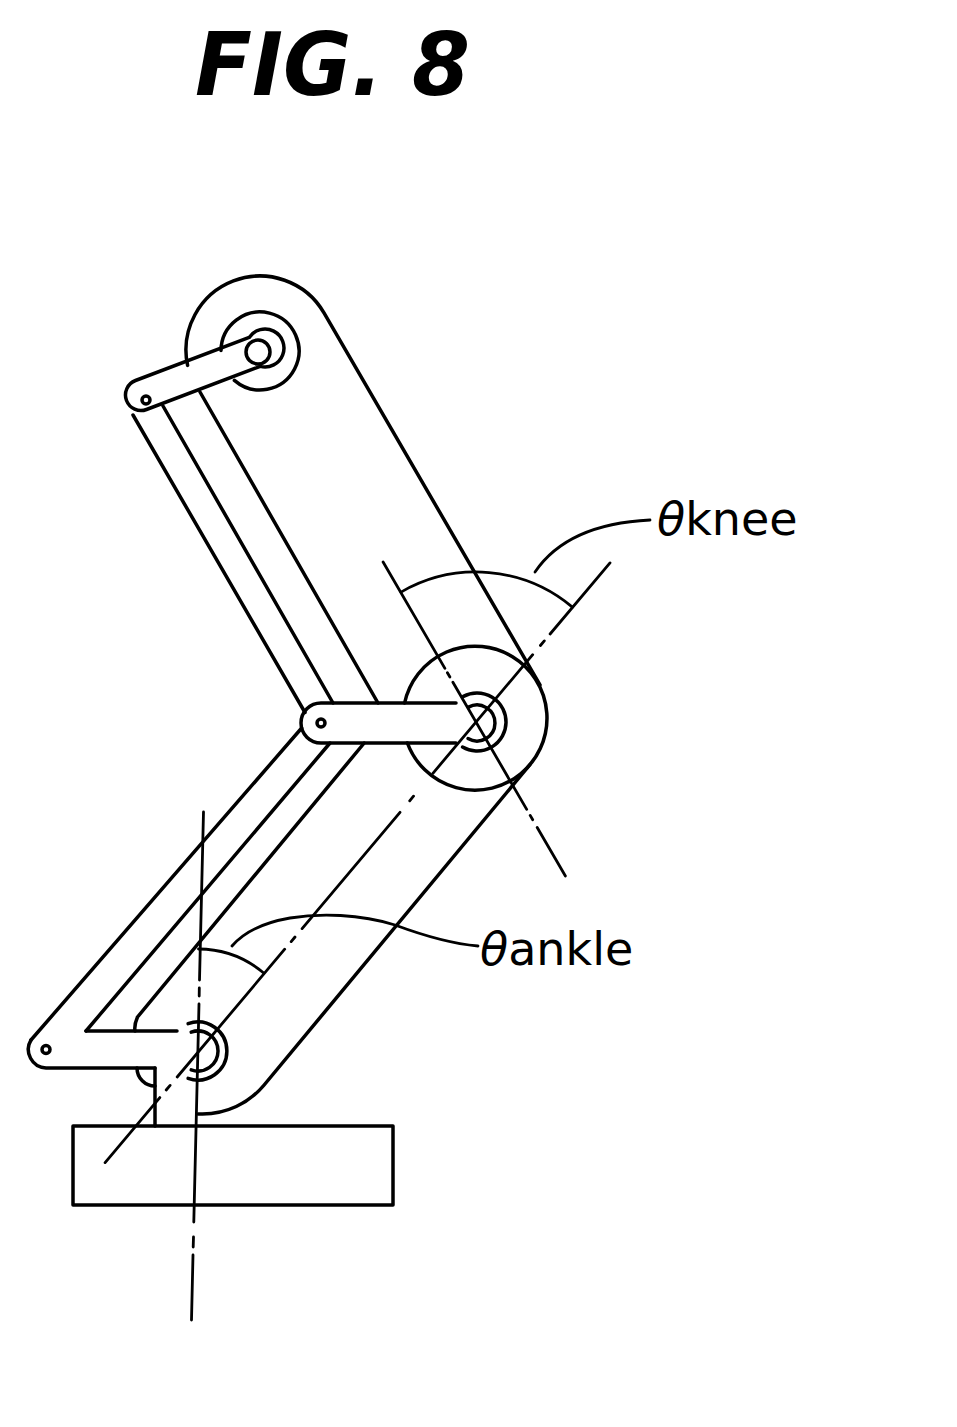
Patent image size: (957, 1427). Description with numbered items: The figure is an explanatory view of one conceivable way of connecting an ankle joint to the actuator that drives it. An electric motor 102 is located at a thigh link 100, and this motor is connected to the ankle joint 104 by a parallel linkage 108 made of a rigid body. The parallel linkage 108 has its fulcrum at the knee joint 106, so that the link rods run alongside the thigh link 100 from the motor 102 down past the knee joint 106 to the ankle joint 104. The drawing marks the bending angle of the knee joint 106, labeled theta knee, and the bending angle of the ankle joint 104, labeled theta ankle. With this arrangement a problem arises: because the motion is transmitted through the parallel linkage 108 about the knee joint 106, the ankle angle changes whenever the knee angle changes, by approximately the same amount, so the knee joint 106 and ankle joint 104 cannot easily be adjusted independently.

The thigh link 100 is at (413, 513).
The electric motor 102 is at (300, 370).
The ankle joint 104 is at (332, 1065).
The knee joint 106 is at (584, 707).
The parallel linkage 108 is at (278, 650).